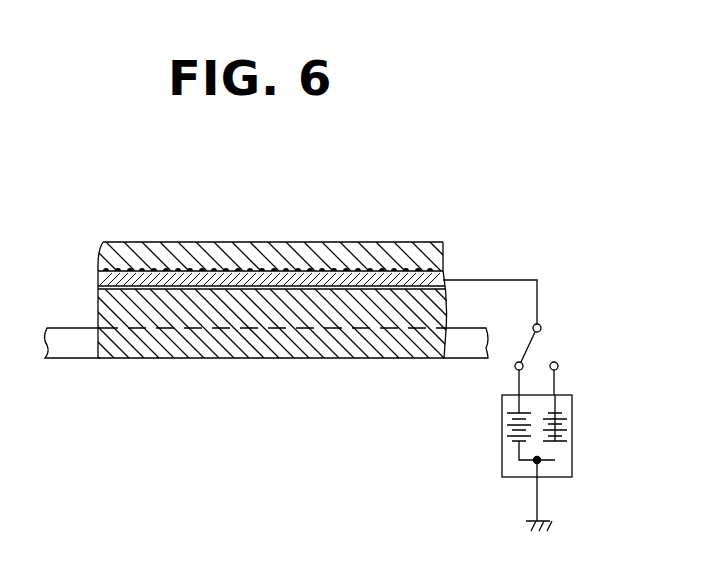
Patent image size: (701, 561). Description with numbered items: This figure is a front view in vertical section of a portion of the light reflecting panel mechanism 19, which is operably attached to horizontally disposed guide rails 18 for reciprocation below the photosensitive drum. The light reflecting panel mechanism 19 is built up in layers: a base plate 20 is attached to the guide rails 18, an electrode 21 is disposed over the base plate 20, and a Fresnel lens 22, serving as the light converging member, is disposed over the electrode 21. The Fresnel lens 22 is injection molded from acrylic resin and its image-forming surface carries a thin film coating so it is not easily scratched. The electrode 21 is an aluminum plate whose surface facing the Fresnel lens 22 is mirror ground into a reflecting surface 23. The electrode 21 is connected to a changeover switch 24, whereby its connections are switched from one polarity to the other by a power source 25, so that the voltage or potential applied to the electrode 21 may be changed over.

The guide rails 18 is at (76, 350).
The light reflecting panel mechanism 19 is at (202, 320).
The base plate 20 is at (348, 317).
The electrode 21 is at (273, 290).
The Fresnel lens 22 is at (207, 245).
The reflecting surface 23 is at (306, 265).
The changeover switch 24 is at (540, 337).
The power source 25 is at (502, 405).